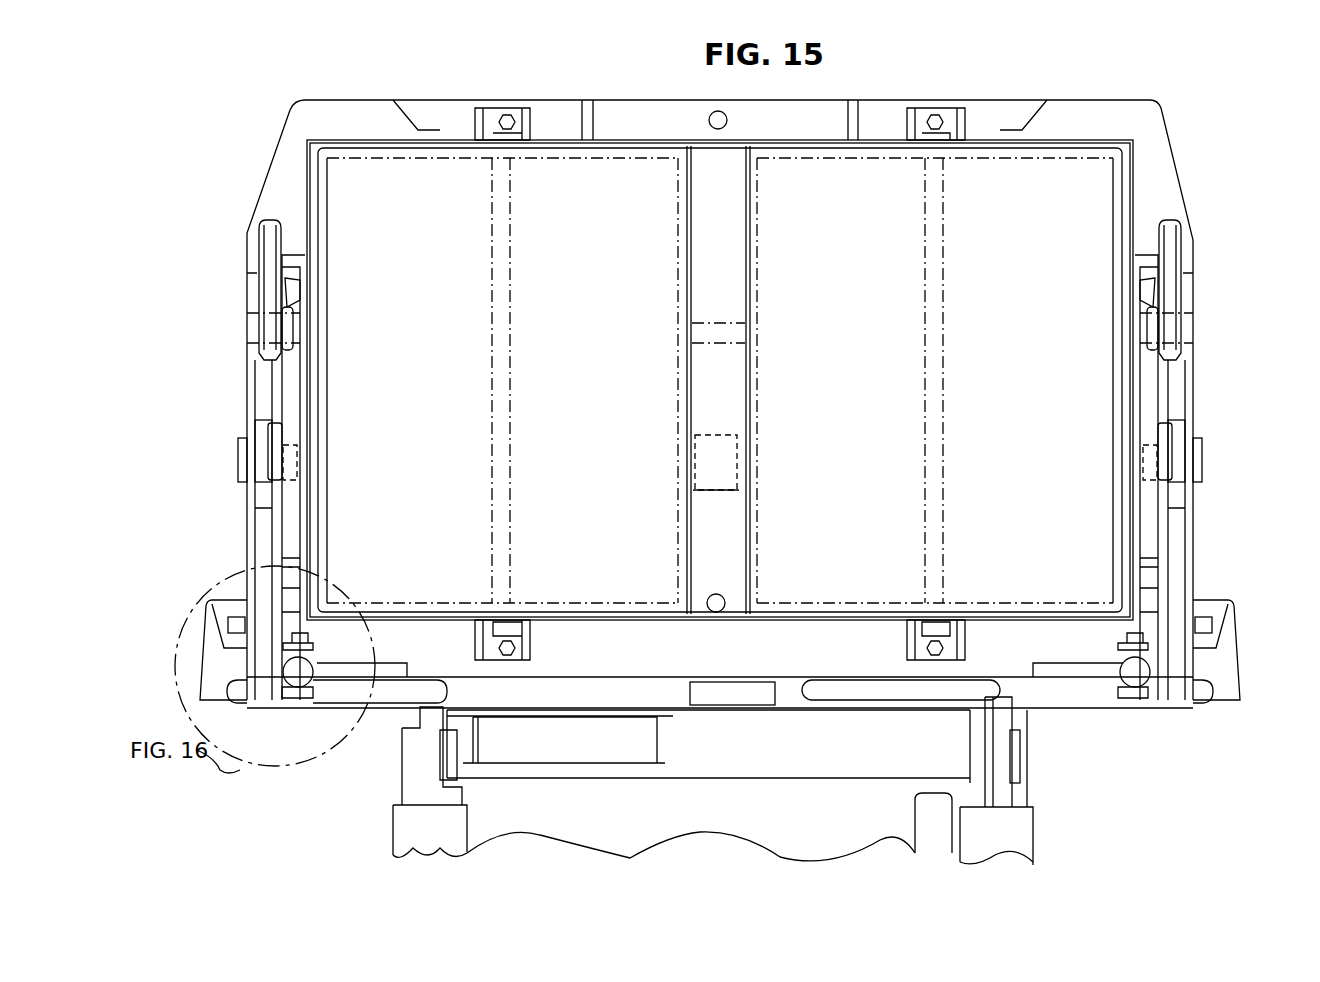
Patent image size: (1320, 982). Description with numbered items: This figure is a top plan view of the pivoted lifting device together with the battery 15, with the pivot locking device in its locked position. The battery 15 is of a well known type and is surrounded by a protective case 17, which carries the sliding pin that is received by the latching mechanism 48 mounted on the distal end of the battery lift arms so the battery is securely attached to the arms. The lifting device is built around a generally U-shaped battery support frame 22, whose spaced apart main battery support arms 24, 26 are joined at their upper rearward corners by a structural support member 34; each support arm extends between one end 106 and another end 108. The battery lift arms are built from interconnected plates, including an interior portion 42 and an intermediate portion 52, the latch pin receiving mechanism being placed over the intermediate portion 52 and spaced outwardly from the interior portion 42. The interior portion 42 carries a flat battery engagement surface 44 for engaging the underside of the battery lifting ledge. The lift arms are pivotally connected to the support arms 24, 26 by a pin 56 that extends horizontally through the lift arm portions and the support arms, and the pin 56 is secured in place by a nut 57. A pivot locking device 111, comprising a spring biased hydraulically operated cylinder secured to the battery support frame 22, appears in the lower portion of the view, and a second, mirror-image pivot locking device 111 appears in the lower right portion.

The battery 15 is at (623, 95).
The protective case 17 is at (808, 113).
The latching mechanism 48 is at (197, 236).
The intermediate portion 52 is at (247, 365).
The interior portion 42 is at (288, 397).
The battery engagement surface 44 is at (1143, 393).
The another end 108 is at (263, 437).
The pivot pin 56 is at (288, 467).
The nut 57 is at (235, 482).
The main battery support arm 26 is at (262, 533).
The main battery support arm 24 is at (1175, 545).
The one end 106 is at (265, 662).
The pivot locking device 111 is at (319, 645).
The battery support frame 22 is at (312, 753).
The structural support member 34 is at (788, 697).